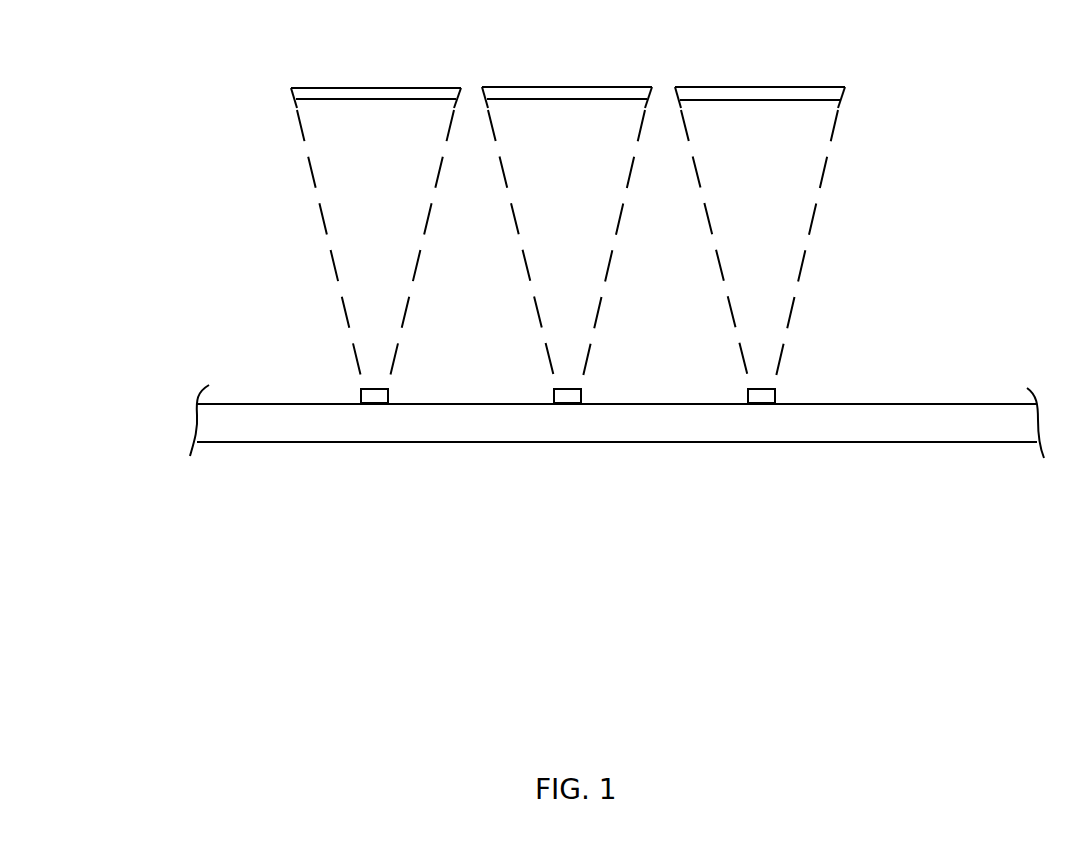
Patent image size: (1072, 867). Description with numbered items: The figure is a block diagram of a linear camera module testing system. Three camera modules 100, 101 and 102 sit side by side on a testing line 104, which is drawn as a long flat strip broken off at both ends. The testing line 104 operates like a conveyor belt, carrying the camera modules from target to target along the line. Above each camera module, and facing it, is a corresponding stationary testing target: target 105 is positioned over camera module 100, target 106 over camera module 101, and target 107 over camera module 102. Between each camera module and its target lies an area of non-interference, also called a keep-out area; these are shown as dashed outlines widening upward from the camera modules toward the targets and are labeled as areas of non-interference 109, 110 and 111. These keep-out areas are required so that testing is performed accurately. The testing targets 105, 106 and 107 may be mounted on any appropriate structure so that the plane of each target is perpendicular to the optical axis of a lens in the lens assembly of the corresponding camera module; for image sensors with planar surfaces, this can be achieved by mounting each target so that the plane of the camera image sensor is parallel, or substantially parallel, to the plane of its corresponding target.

The camera module 100 is at (390, 396).
The camera module 101 is at (583, 396).
The camera module 102 is at (777, 396).
The testing line 104 is at (556, 432).
The target 105 is at (357, 86).
The target 106 is at (563, 86).
The target 107 is at (761, 86).
The area of non-interference 109 is at (398, 181).
The area of non-interference 110 is at (591, 181).
The area of non-interference 111 is at (783, 181).